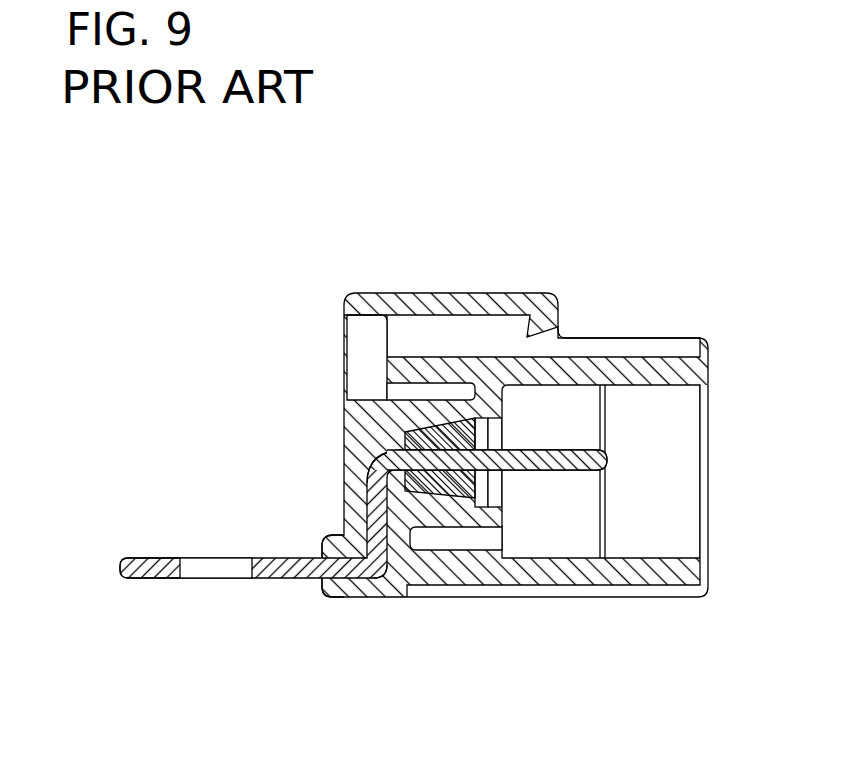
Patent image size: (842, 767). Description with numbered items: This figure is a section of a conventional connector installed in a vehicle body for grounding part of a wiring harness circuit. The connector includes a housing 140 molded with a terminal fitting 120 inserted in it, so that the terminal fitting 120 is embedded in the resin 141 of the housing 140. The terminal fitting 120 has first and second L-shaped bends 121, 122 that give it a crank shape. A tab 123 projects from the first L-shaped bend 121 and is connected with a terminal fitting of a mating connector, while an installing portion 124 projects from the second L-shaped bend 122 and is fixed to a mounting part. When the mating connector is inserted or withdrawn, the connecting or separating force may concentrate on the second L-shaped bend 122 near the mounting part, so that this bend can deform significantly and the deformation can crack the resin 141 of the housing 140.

The housing 140 is at (402, 282).
The resin 141 is at (324, 544).
The terminal fitting 120 is at (276, 588).
The first L-shaped bend 121 is at (380, 463).
The second L-shaped bend 122 is at (366, 563).
The tab 123 is at (577, 468).
The installing portion 124 is at (145, 566).